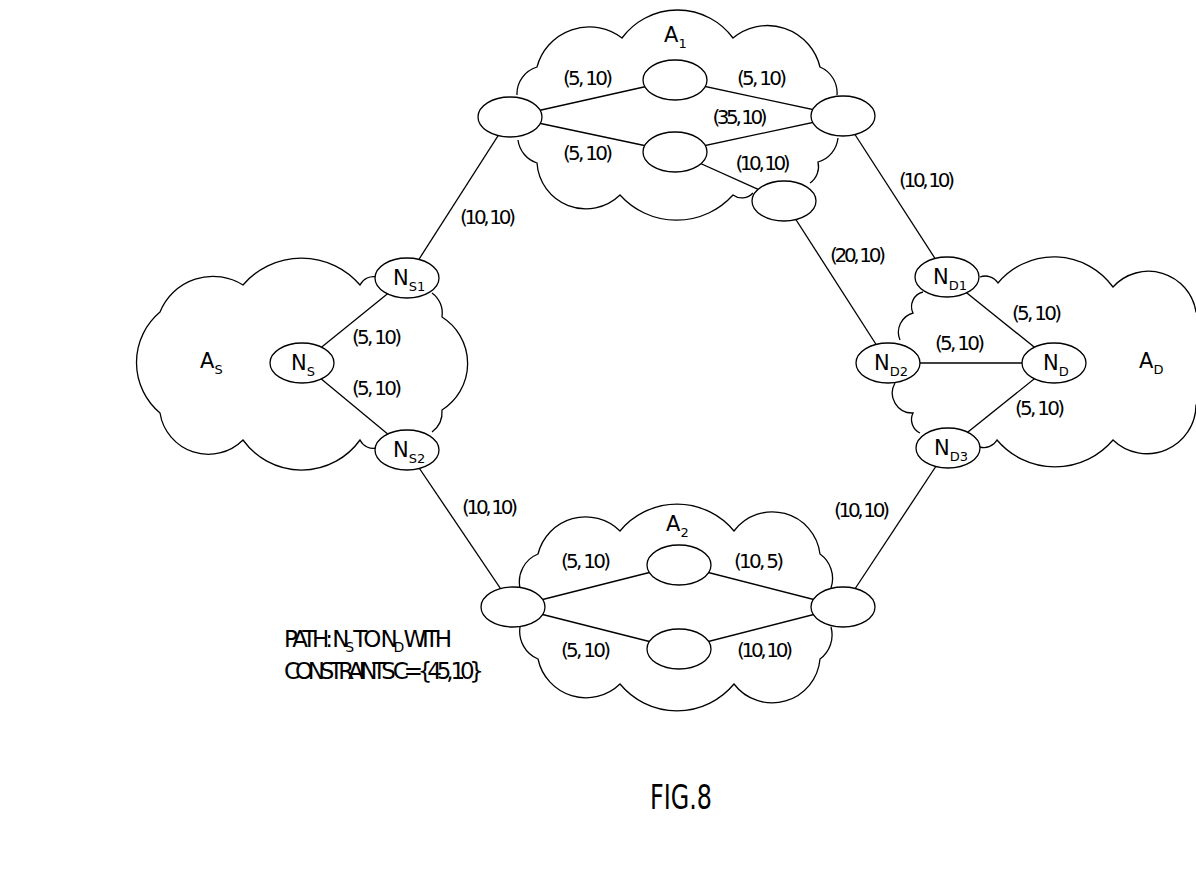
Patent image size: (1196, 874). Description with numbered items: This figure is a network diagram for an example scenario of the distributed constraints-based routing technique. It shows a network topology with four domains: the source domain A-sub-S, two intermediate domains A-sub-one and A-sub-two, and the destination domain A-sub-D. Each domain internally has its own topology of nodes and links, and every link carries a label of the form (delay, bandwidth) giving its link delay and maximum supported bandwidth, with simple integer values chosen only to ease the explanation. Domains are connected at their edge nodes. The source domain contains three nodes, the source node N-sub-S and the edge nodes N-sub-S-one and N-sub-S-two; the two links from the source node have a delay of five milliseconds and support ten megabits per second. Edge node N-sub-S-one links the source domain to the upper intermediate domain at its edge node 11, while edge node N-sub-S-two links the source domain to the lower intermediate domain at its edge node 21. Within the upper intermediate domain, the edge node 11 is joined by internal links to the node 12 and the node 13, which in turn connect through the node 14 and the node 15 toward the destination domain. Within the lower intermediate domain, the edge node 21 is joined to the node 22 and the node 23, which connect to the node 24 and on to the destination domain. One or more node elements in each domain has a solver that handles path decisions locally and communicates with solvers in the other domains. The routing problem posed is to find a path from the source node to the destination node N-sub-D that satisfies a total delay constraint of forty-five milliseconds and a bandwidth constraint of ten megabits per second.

The edge node N11 11 is at (510, 117).
The network node N12 of area A1 12 is at (675, 80).
The network node N13 of area A1 13 is at (675, 152).
The network node N14 of area A1 14 is at (784, 201).
The network node N15 of area A1 15 is at (843, 116).
The edge node N21 21 is at (513, 607).
The network node N22 of area A2 22 is at (679, 565).
The network node N23 of area A2 23 is at (679, 649).
The network node N24 of area A2 24 is at (843, 607).